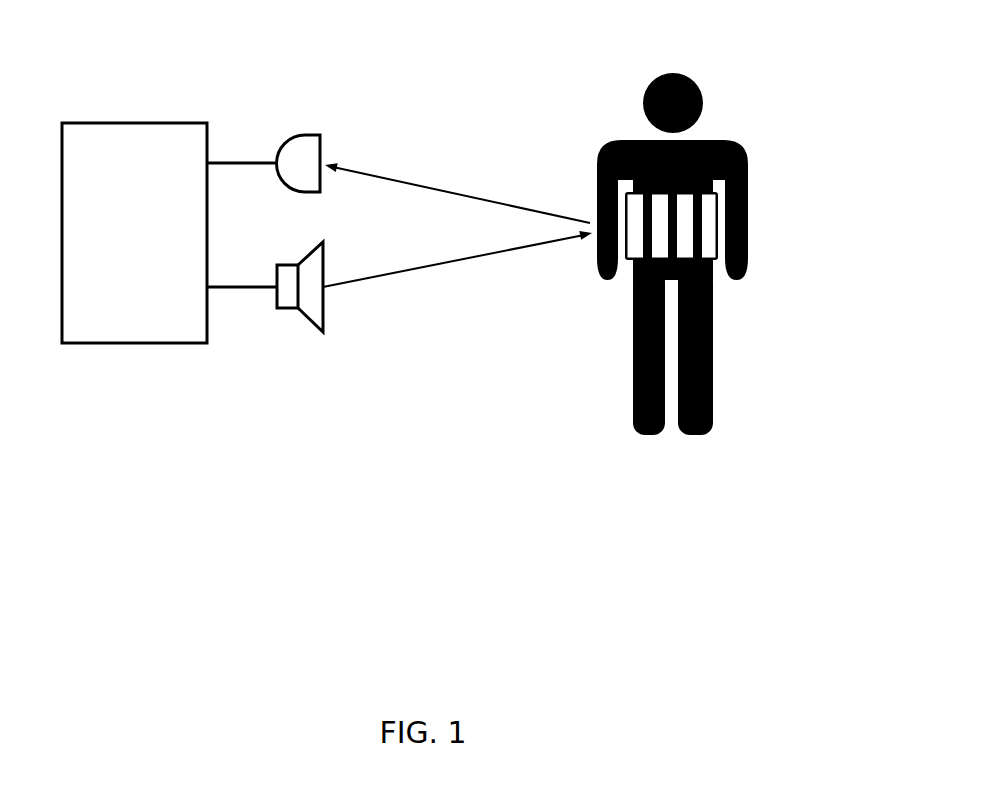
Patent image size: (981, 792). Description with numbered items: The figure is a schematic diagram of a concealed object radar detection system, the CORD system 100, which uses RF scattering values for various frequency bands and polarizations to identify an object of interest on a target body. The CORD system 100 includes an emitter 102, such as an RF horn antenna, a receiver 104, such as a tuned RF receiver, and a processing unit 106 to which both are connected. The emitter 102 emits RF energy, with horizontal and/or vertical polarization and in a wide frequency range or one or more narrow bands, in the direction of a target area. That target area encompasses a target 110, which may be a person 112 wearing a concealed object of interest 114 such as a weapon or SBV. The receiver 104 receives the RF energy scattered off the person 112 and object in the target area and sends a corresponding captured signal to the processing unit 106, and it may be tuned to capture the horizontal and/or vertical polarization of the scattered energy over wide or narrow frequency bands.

The CORD system 100 is at (318, 304).
The emitter 102 is at (399, 302).
The receiver 104 is at (320, 140).
The processing unit 106 is at (118, 123).
The target 110 is at (703, 293).
The person 112 is at (732, 98).
The concealed object of interest 114 is at (708, 227).